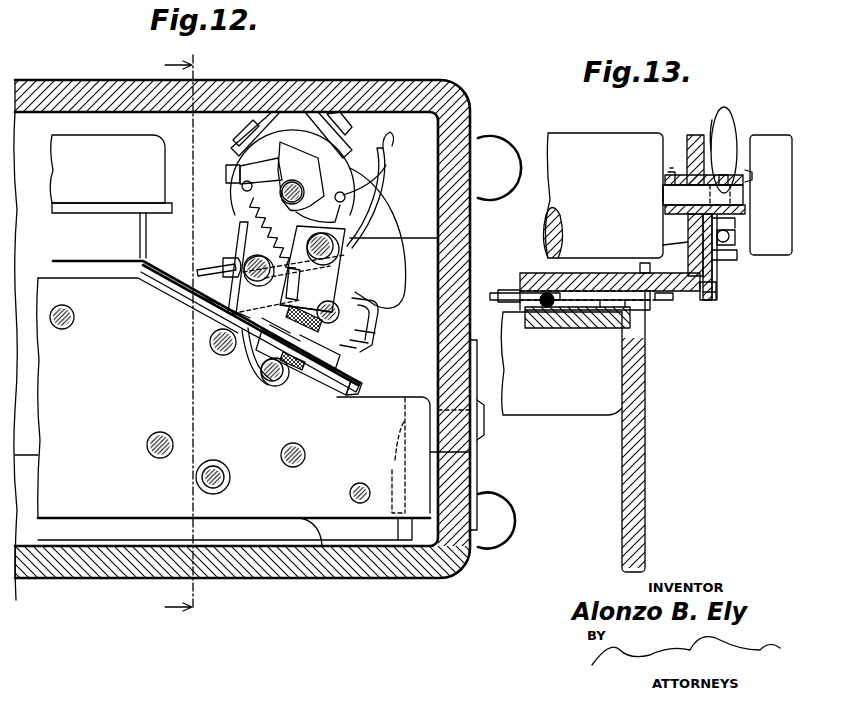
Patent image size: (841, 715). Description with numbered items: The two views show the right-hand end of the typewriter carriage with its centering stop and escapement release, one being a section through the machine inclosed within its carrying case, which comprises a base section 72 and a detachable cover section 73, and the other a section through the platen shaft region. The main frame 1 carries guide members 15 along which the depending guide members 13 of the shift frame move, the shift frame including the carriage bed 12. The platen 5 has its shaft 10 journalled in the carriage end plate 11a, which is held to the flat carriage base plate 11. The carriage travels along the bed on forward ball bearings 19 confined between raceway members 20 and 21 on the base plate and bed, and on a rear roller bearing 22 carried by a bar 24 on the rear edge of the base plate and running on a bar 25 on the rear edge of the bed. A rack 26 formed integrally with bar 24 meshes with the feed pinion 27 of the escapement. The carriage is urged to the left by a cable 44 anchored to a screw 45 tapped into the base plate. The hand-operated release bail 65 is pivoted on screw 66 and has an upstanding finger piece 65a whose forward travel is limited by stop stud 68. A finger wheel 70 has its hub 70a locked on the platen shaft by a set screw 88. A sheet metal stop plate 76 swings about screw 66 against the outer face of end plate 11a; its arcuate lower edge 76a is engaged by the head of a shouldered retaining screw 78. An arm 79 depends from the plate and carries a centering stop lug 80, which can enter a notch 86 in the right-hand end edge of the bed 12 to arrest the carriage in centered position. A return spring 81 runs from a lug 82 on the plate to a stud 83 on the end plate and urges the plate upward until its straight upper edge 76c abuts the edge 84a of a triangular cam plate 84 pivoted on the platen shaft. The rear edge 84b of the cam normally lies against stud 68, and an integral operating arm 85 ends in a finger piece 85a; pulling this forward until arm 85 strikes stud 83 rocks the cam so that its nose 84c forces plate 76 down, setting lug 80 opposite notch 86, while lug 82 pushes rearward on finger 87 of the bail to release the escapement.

In FIG. 12, the main frame 1 is at (104, 510).
In FIG. 13, the main frame 1 is at (622, 435).
In FIG. 13, the platen 5 is at (573, 145).
In FIG. 12, the platen shaft 10 is at (297, 183).
In FIG. 13, the platen shaft 10 is at (663, 192).
In FIG. 12, the carriage base plate 11 is at (226, 256).
In FIG. 13, the carriage base plate 11 is at (536, 273).
In FIG. 12, the carriage end plate 11a is at (398, 264).
In FIG. 13, the carriage end plate 11a is at (692, 135).
In FIG. 12, the carriage bed 12 is at (332, 378).
In FIG. 13, the carriage bed 12 is at (578, 330).
In FIG. 12, the depending guide members 13 is at (292, 366).
In FIG. 12, the guide members 15 is at (262, 380).
In FIG. 12, the forward ball bearings 19 is at (232, 300).
In FIG. 13, the forward ball bearings 19 is at (552, 308).
In FIG. 12, the raceway member 20 is at (226, 266).
In FIG. 13, the raceway member 20 is at (644, 272).
In FIG. 12, the raceway member 21 is at (238, 309).
In FIG. 13, the raceway member 21 is at (585, 310).
In FIG. 12, the rear roller bearing 22 is at (376, 334).
In FIG. 12, the bar 24 is at (367, 313).
In FIG. 12, the bar 25 is at (356, 348).
In FIG. 12, the rack 26 is at (368, 343).
In FIG. 12, the feed pinion 27 is at (320, 366).
In FIG. 12, the draw-band or cable 44 is at (236, 352).
In FIG. 13, the draw-band or cable 44 is at (496, 292).
In FIG. 12, the screw 45 is at (270, 325).
In FIG. 13, the screw 45 is at (668, 300).
In FIG. 12, the hand-operated release bail 65 is at (330, 287).
In FIG. 13, the hand-operated release bail 65 is at (714, 260).
In FIG. 12, the finger pieces 65a is at (372, 165).
In FIG. 13, the finger pieces 65a is at (728, 118).
In FIG. 12, the pivot screw 66 is at (336, 248).
In FIG. 13, the pivot screw 66 is at (735, 222).
In FIG. 12, the stop stud 68 is at (370, 190).
In FIG. 13, the finger wheel 70 is at (771, 135).
In FIG. 13, the hub 70a is at (752, 176).
In FIG. 12, the base section 72 is at (432, 511).
In FIG. 12, the cover section 73 is at (44, 125).
In FIG. 12, the stop plate 76 is at (240, 232).
In FIG. 13, the stop plate 76 is at (688, 238).
In FIG. 12, the arcuate lower edge 76a is at (252, 362).
In FIG. 13, the arcuate lower edge 76a is at (662, 242).
In FIG. 12, the straight upper edge 76c is at (286, 184).
In FIG. 12, the shouldered retaining screw 78 is at (259, 262).
In FIG. 13, the shouldered retaining screw 78 is at (718, 294).
In FIG. 12, the stop-carrying arm 79 is at (205, 273).
In FIG. 12, the centering stop lug 80 is at (240, 312).
In FIG. 13, the centering stop lug 80 is at (704, 191).
In FIG. 12, the return spring 81 is at (252, 209).
In FIG. 13, the return spring 81 is at (735, 237).
In FIG. 12, the lug 82 is at (296, 266).
In FIG. 13, the lug 82 is at (737, 256).
In FIG. 12, the stud 83 is at (242, 187).
In FIG. 12, the cam plate 84 is at (292, 162).
In FIG. 12, the straight edge 84a is at (322, 198).
In FIG. 12, the rear edge 84b is at (385, 145).
In FIG. 12, the nose portion 84c is at (318, 214).
In FIG. 12, the operating arm 85 is at (234, 166).
In FIG. 13, the operating arm 85 is at (712, 120).
In FIG. 12, the finger piece 85a is at (226, 168).
In FIG. 12, the notch 86 is at (262, 318).
In FIG. 13, the notch 86 is at (612, 320).
In FIG. 12, the finger 87 is at (338, 270).
In FIG. 13, the set screw 88 is at (722, 175).